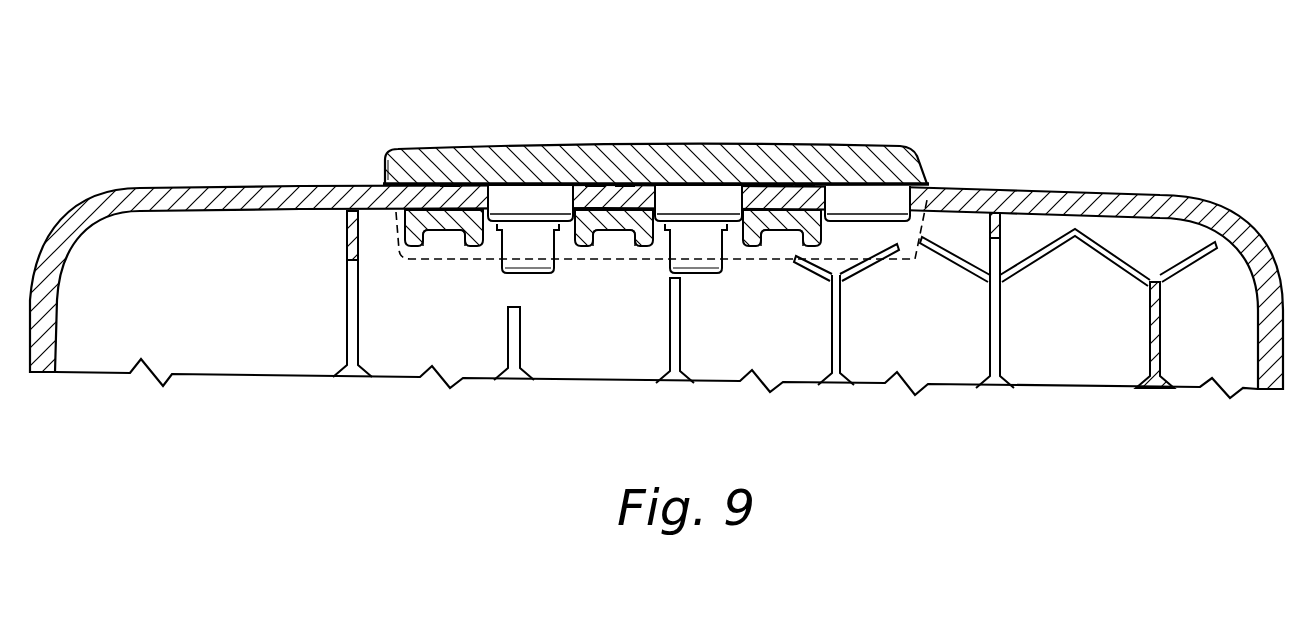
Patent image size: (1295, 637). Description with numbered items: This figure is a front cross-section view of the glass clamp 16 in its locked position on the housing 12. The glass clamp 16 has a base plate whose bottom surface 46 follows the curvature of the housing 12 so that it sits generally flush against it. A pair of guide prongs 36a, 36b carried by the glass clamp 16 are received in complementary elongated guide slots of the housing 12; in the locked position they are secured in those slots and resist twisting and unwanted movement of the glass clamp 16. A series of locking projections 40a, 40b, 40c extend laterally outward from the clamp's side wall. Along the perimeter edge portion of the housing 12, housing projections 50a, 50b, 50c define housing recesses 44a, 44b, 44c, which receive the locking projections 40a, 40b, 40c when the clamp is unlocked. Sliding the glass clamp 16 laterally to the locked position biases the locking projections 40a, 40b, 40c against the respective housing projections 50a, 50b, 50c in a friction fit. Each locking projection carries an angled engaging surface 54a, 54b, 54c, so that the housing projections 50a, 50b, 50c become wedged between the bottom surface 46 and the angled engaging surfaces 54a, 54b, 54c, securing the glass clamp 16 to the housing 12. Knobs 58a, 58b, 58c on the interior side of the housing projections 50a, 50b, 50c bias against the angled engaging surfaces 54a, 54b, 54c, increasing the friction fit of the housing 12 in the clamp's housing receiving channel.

The housing 12 is at (1218, 212).
The glass clamp 16 is at (900, 150).
The guide prong 36a is at (697, 264).
The guide prong 36b is at (533, 264).
The locking projection 40a is at (427, 236).
The locking projection 40b is at (597, 236).
The locking projection 40c is at (765, 238).
The housing recess 44a is at (533, 200).
The housing recess 44b is at (697, 197).
The housing recess 44c is at (873, 207).
The bottom surface 46 is at (550, 186).
The housing projection 50a is at (447, 196).
The housing projection 50b is at (625, 194).
The housing projection 50c is at (783, 198).
The angled engaging surface 54a is at (412, 153).
The angled engaging surface 54b is at (595, 191).
The angled engaging surface 54c is at (803, 198).
The knob 58a is at (456, 236).
The knob 58b is at (628, 236).
The knob 58c is at (781, 236).